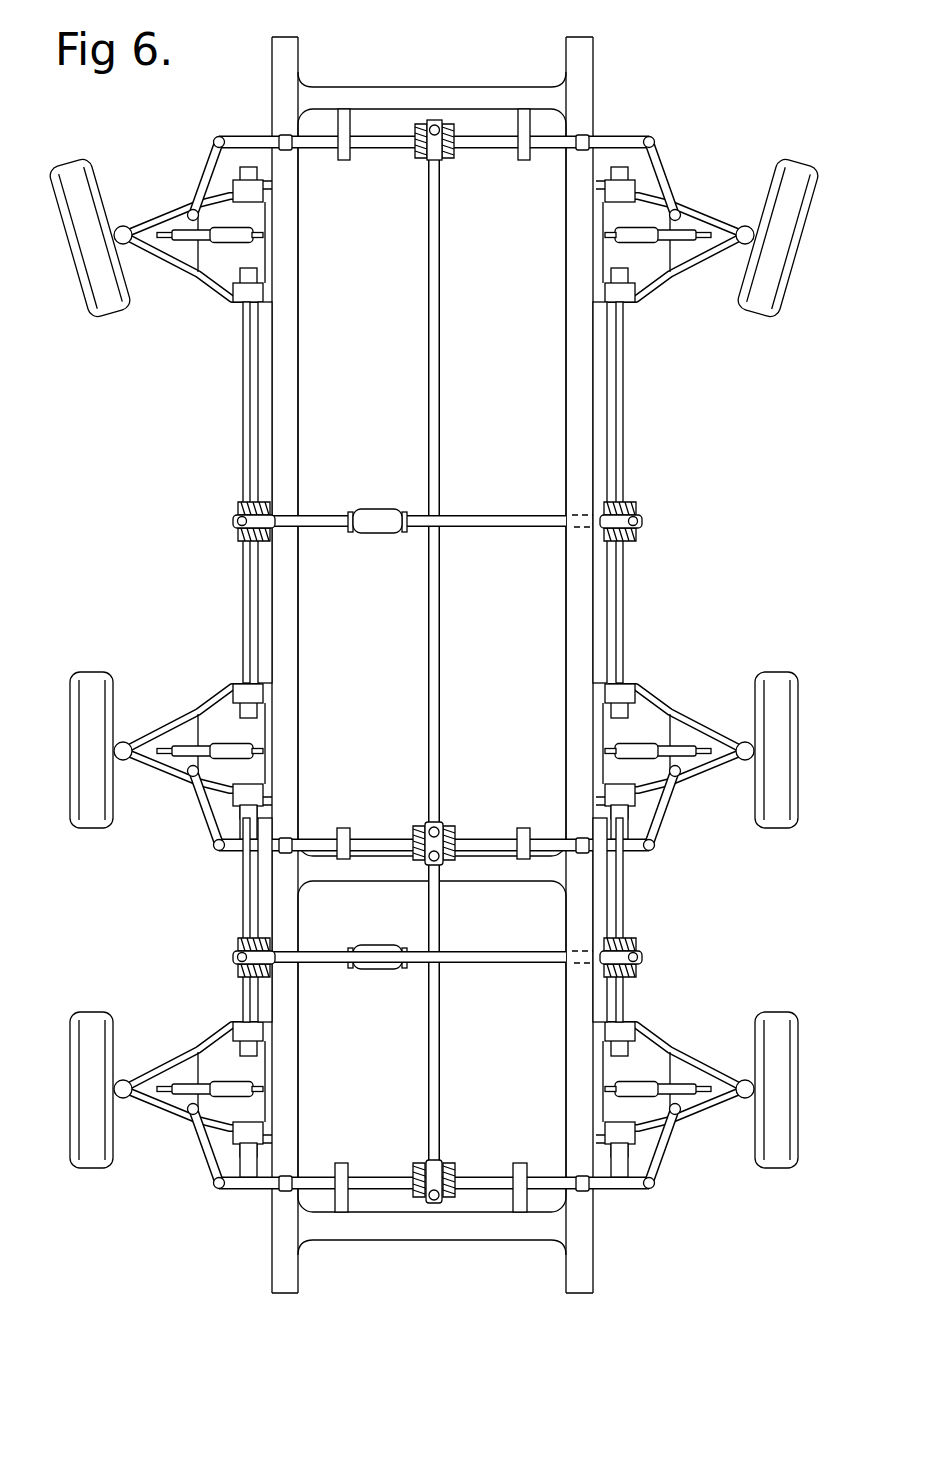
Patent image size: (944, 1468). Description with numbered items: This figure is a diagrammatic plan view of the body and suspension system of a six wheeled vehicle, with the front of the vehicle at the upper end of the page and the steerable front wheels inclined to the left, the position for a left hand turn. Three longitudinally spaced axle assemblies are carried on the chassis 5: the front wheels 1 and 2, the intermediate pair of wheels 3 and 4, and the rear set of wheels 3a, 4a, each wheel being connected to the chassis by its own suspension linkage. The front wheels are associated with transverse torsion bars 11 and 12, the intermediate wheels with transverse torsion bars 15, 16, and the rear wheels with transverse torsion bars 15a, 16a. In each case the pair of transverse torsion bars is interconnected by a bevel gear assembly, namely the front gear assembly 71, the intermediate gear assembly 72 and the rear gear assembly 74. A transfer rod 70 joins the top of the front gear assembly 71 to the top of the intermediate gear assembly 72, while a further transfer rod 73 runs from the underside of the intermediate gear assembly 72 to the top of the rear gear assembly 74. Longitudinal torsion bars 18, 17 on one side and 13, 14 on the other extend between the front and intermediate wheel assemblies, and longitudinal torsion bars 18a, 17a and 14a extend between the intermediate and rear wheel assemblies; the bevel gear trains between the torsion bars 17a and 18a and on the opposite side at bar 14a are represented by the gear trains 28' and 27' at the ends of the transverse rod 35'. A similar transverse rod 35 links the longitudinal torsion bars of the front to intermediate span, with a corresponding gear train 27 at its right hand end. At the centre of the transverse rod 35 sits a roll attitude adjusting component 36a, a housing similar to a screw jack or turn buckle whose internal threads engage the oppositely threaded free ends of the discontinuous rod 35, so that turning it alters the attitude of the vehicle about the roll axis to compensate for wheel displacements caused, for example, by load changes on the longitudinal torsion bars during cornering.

The front wheel 1 is at (68, 174).
The front wheel 2 is at (748, 165).
The intermediate wheel 3 is at (779, 690).
The intermediate wheel 4 is at (94, 676).
The rear wheel 3a is at (772, 1162).
The rear wheel 4a is at (93, 1162).
The chassis 5 is at (303, 334).
The front wheel transverse torsion bar 11 is at (320, 152).
The front wheel transverse torsion bar 12 is at (539, 152).
The right connecting rod 13 is at (636, 430).
The right connecting rod 14 is at (636, 662).
The torsion bar 14a is at (636, 1012).
The intermediate transverse torsion bar 15 is at (532, 828).
The rear transverse torsion bar 15a is at (543, 1178).
The intermediate transverse torsion bar 16 is at (320, 858).
The rear transverse torsion bar 16a is at (377, 1178).
The left connecting rod 17 is at (238, 600).
The torsion bar 17a is at (238, 1008).
The left connecting rod 18 is at (238, 414).
The torsion bar 18a is at (238, 910).
The right brush coupling 27 is at (687, 512).
The right rear brush coupling 27' is at (676, 940).
The left rear brush coupling 28' is at (187, 950).
The transverse rod 35 is at (436, 557).
The rear transverse shaft 35' is at (436, 930).
The roll attitude adjusting component 36a is at (377, 512).
The transfer rod 70 is at (446, 360).
The front transverse gear assembly 71 is at (430, 120).
The intermediate transverse gear assembly 72 is at (424, 826).
The transfer rod 73 is at (446, 1086).
The rear transverse gear assembly 74 is at (432, 1205).